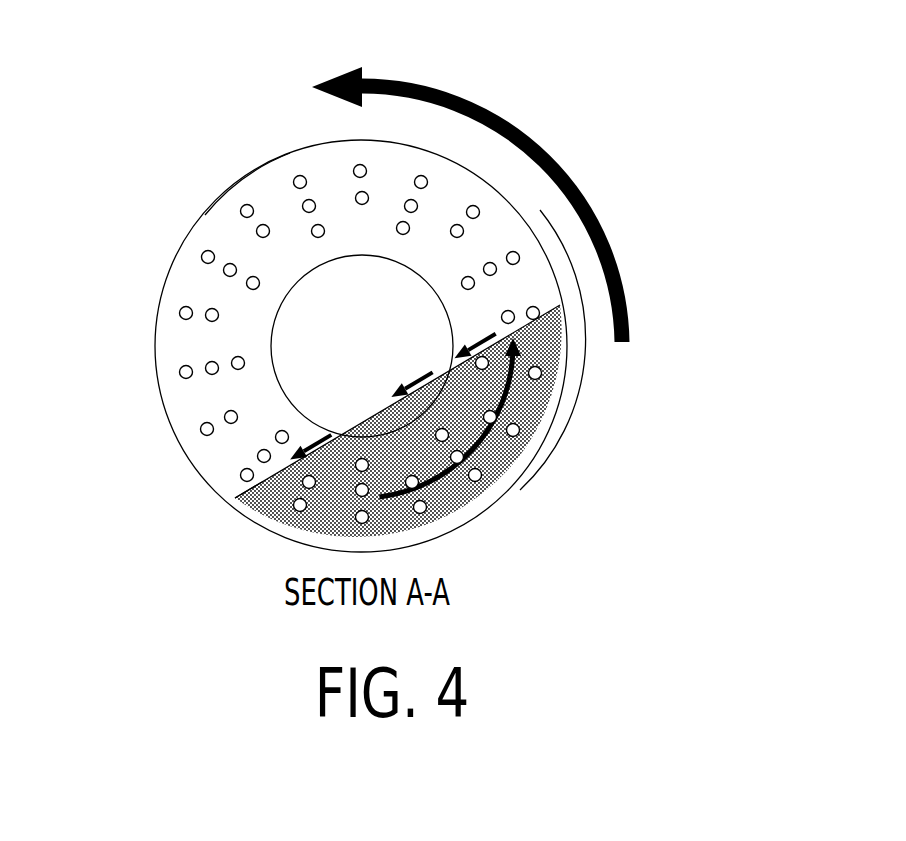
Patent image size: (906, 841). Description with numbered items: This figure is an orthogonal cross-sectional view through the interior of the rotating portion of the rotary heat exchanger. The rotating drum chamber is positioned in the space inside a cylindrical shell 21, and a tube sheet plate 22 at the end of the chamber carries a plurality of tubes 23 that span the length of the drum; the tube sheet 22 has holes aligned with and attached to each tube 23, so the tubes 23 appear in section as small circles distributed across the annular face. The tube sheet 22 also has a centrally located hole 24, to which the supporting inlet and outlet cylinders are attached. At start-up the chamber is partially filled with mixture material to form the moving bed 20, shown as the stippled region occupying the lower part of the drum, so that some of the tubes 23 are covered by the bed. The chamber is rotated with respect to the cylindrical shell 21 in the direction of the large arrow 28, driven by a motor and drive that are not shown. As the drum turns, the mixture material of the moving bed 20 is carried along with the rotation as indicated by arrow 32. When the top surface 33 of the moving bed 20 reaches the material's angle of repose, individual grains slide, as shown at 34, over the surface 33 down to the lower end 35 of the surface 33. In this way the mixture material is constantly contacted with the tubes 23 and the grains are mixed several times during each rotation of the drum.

The moving bed 20 is at (545, 405).
The cylindrical shell 21 is at (250, 176).
The tube sheet plate 22 is at (230, 232).
The tube 23 is at (203, 252).
The centrally located hole 24 is at (420, 276).
The arrow 28 is at (547, 152).
The arrow 32 is at (560, 341).
The top surface 33 is at (505, 330).
The sliding of grains 34 is at (397, 390).
The lower end 35 is at (236, 497).